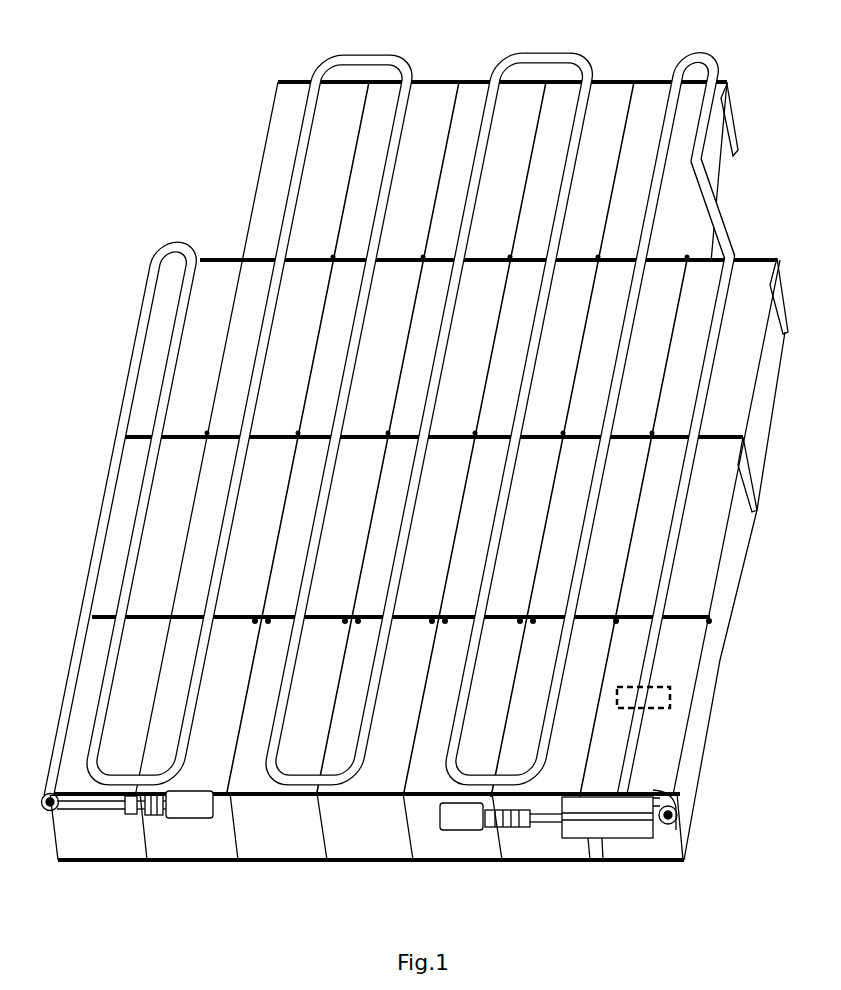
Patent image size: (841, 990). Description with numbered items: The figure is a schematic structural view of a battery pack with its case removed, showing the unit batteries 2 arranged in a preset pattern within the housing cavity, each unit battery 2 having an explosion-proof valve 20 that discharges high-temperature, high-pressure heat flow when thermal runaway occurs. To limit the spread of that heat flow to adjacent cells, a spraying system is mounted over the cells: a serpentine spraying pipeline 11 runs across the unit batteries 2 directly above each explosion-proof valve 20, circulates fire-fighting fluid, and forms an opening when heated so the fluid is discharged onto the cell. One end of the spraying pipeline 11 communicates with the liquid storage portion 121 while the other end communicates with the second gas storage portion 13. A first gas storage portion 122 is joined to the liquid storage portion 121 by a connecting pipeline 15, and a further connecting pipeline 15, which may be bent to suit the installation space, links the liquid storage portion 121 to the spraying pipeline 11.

The unit battery 2 is at (722, 588).
The spraying pipeline 11 is at (354, 58).
The second gas storage portion 13 is at (187, 818).
The connecting pipeline 15 is at (82, 812).
The explosion-proof valve 20 is at (670, 694).
The liquid storage portion 121 is at (608, 830).
The first gas storage portion 122 is at (473, 823).